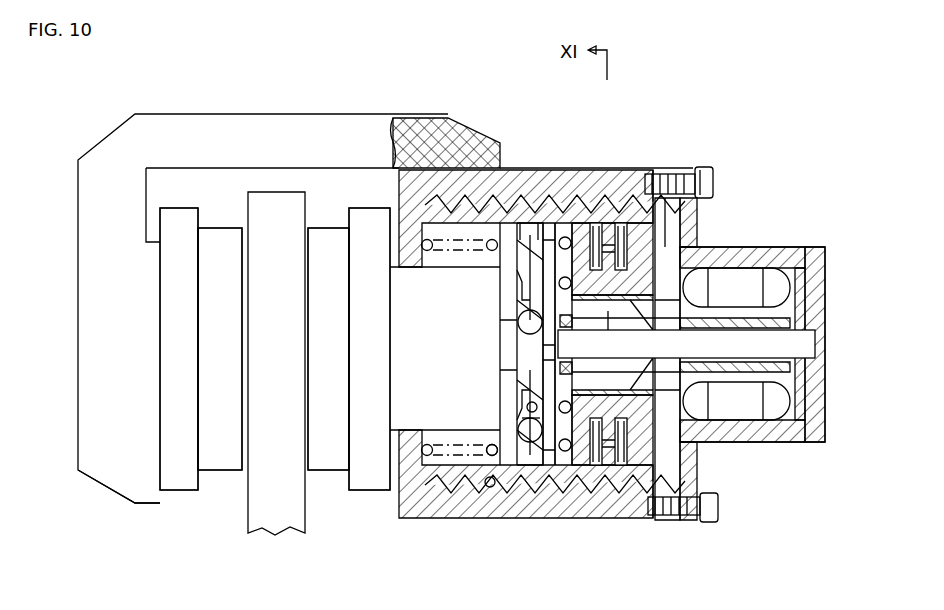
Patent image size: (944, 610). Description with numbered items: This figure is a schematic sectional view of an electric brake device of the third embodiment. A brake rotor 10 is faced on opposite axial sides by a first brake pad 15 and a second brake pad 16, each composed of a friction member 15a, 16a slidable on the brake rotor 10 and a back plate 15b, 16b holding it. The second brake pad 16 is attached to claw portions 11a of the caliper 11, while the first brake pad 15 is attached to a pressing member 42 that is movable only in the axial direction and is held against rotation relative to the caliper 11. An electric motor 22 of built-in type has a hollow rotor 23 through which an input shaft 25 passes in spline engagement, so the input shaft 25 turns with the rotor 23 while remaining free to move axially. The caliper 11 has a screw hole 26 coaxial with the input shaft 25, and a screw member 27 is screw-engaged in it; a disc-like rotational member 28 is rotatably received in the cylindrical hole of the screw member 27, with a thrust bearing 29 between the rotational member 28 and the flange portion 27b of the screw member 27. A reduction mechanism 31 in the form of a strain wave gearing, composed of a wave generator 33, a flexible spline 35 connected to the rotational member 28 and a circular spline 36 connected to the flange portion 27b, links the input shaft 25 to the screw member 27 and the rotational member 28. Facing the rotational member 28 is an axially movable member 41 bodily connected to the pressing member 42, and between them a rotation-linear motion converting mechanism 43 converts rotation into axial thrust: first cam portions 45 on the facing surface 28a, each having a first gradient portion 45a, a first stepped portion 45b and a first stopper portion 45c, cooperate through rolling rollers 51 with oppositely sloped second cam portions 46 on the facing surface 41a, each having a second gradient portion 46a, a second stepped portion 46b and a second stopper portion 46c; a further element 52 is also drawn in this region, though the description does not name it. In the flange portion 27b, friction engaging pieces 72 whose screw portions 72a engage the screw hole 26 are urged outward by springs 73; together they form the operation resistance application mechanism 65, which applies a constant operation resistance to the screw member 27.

The brake rotor 10 is at (278, 210).
The caliper 11 is at (341, 130).
The claw portions 11a is at (160, 502).
The first brake pad 15 is at (337, 205).
The friction member 15a is at (327, 465).
The back plate 15b is at (370, 478).
The second brake pad 16 is at (210, 200).
The friction member 16a is at (218, 465).
The back plate 16b is at (180, 478).
The electric motor 22 is at (778, 252).
The rotor 23 is at (765, 322).
The input shaft 25 is at (805, 346).
The screw hole 26 is at (490, 487).
The screw member 27 is at (478, 490).
The flange portion 27b is at (632, 492).
The rotational member 28 is at (580, 505).
The facing surface 28a is at (598, 482).
The thrust bearing 29 is at (590, 222).
The reduction mechanism 31 is at (690, 270).
The wave generator 33 is at (700, 440).
The flexible spline 35 is at (690, 470).
The circular spline 36 is at (658, 307).
The axially movable member 41 is at (508, 462).
The facing surface 41a is at (520, 282).
The pressing member 42 is at (408, 160).
The rotation-linear motion converting mechanism 43 is at (537, 470).
The first cam portions 45 is at (536, 230).
The first gradient portion 45a is at (540, 360).
The first stepped portion 45b is at (520, 418).
The first stopper portion 45c is at (528, 406).
The second cam portions 46 is at (525, 470).
The second gradient portion 46a is at (578, 218).
The second stepped portion 46b is at (515, 275).
The second stopper portion 46c is at (520, 220).
The rolling rollers 51 is at (517, 322).
The spring 52 is at (433, 268).
The operation resistance application mechanism 65 is at (673, 186).
The friction engaging pieces 72 is at (622, 225).
The screw portions 72a is at (652, 492).
The springs 73 is at (697, 224).